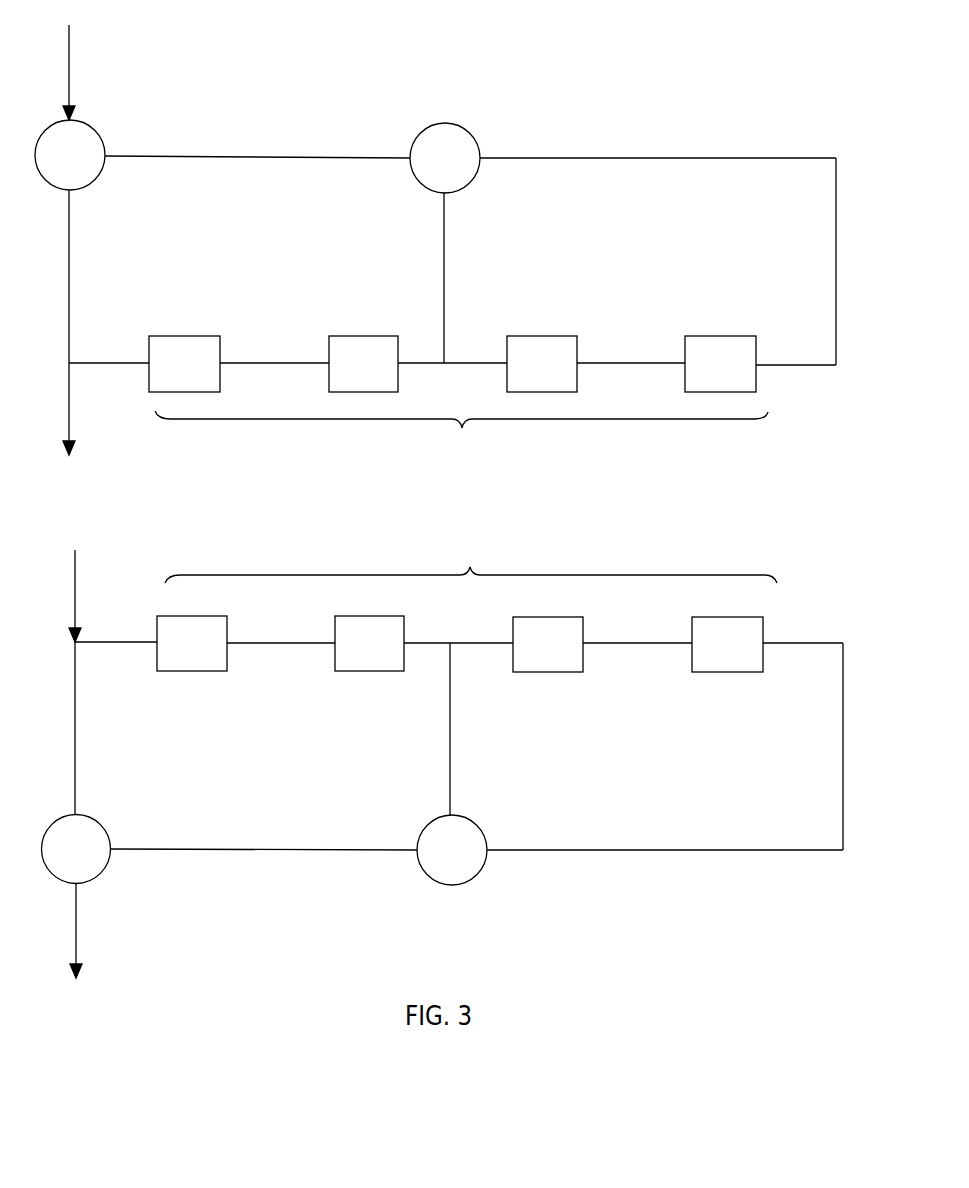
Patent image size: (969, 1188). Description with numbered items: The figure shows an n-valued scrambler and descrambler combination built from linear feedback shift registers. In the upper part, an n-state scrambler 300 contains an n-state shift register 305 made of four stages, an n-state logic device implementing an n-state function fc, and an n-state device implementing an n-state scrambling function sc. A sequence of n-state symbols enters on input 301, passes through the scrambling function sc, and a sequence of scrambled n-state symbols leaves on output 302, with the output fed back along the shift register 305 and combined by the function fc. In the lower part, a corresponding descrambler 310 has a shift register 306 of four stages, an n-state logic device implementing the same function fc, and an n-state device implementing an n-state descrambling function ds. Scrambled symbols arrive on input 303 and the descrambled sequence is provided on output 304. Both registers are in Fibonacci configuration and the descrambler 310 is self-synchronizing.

The n-state scrambler 300 is at (466, 241).
The input of n-state symbols 301 is at (95, 64).
The output of scrambled n-state symbols 302 is at (99, 418).
The input of scrambled n-state symbols 303 is at (104, 591).
The output of descrambled n-state symbols 304 is at (108, 931).
The n-state shift register 305 is at (458, 402).
The shift register 306 is at (467, 602).
The descrambler 310 is at (471, 745).